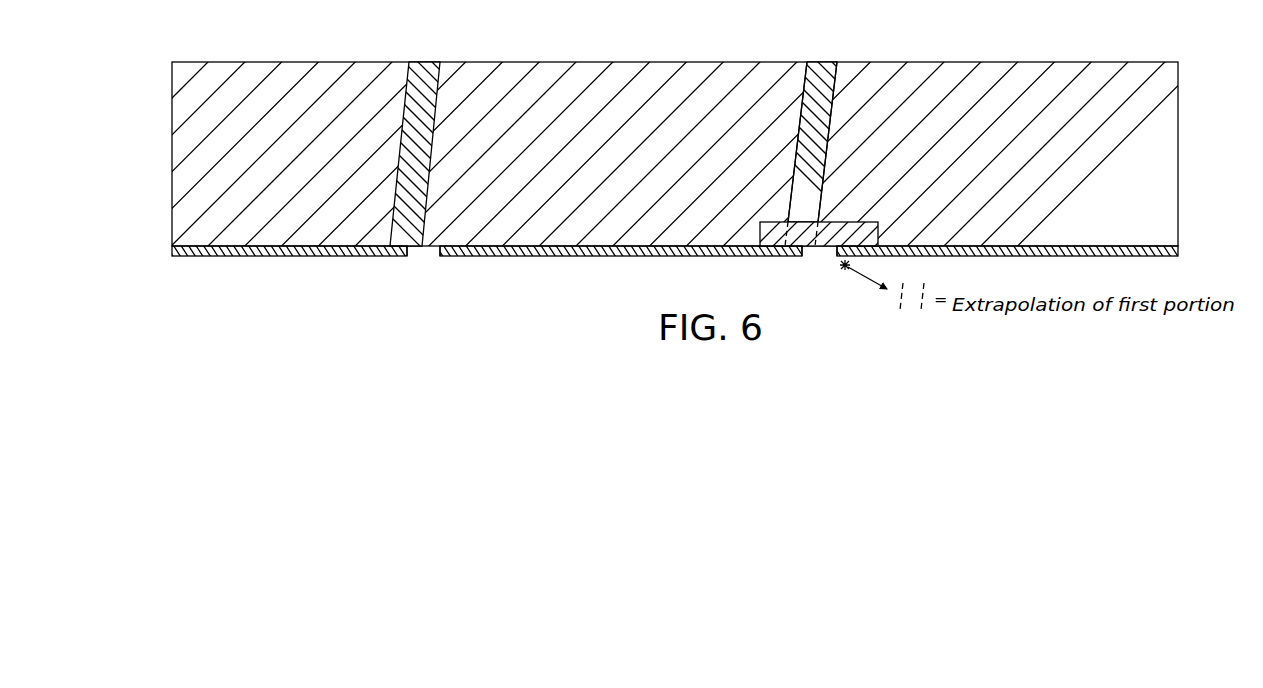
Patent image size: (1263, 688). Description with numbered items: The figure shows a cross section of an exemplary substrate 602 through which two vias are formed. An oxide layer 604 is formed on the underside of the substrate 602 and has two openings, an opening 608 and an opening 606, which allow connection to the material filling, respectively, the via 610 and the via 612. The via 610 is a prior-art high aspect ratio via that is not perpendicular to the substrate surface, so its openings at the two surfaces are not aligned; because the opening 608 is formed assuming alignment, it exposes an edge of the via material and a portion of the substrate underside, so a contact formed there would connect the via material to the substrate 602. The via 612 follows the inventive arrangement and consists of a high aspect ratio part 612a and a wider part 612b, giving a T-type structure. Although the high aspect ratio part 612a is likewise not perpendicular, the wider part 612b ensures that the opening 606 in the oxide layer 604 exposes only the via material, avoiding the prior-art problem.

The substrate 602 is at (1178, 155).
The oxide layer 604 is at (287, 257).
The opening 606 is at (822, 258).
The opening 608 is at (423, 259).
The via 610 is at (427, 62).
The via 612 is at (826, 62).
The high aspect ratio part 612a is at (806, 146).
The wider part 612b is at (772, 247).